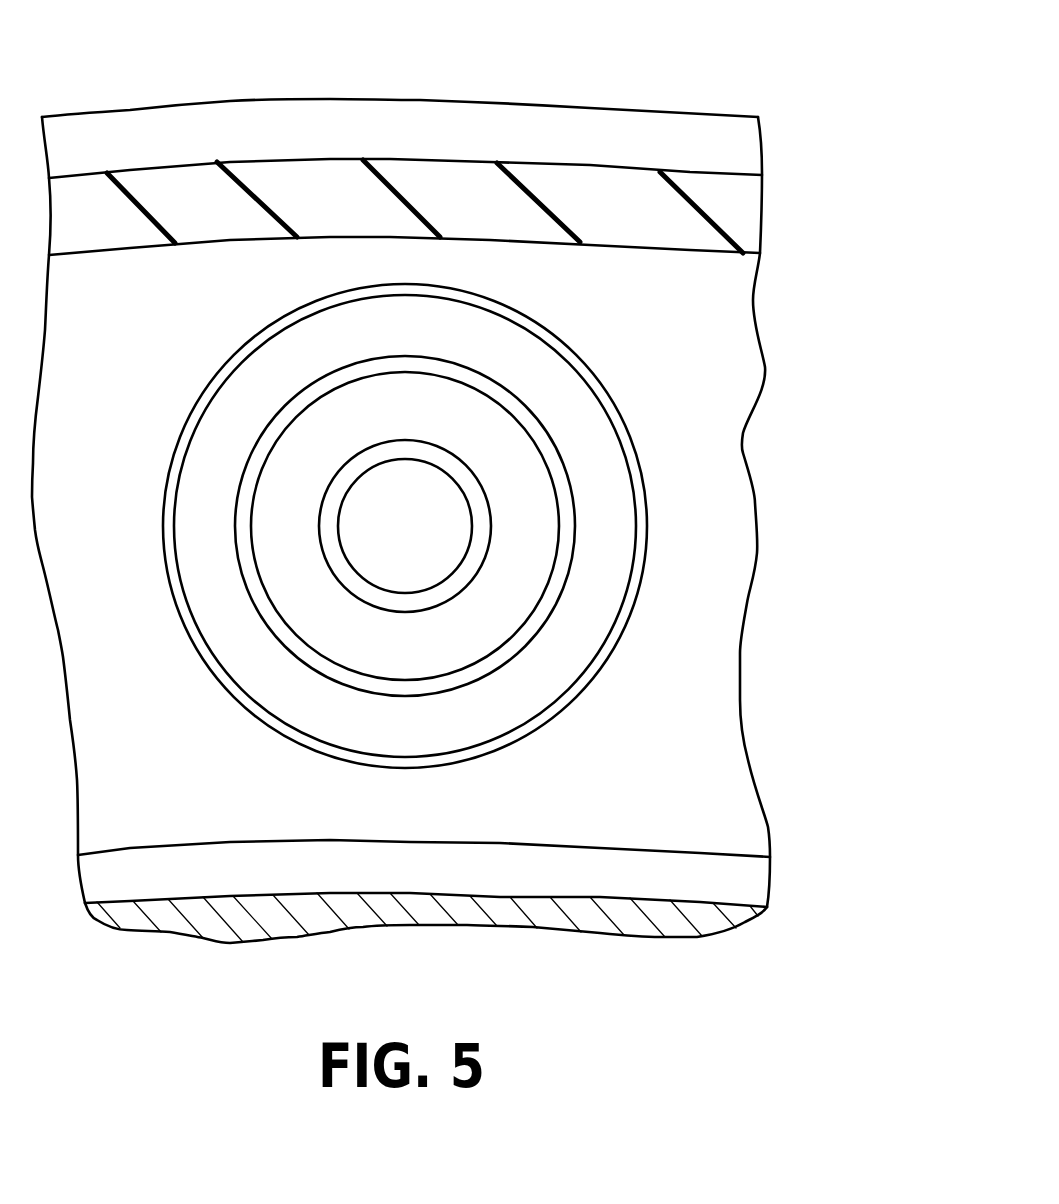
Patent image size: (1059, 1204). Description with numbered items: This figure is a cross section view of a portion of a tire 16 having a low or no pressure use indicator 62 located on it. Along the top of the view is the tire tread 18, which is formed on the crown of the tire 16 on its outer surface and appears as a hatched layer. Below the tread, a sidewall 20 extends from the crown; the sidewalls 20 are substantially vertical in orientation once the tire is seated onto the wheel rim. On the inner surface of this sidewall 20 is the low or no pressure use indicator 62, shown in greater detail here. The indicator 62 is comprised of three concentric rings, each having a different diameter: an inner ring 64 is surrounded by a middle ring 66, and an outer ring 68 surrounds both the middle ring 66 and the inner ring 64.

The tire 16 is at (727, 218).
The tire tread 18 is at (672, 115).
The sidewall 20 is at (690, 740).
The low or no pressure use indicator 62 is at (440, 526).
The inner ring 64 is at (463, 461).
The middle ring 66 is at (572, 483).
The outer ring 68 is at (648, 562).